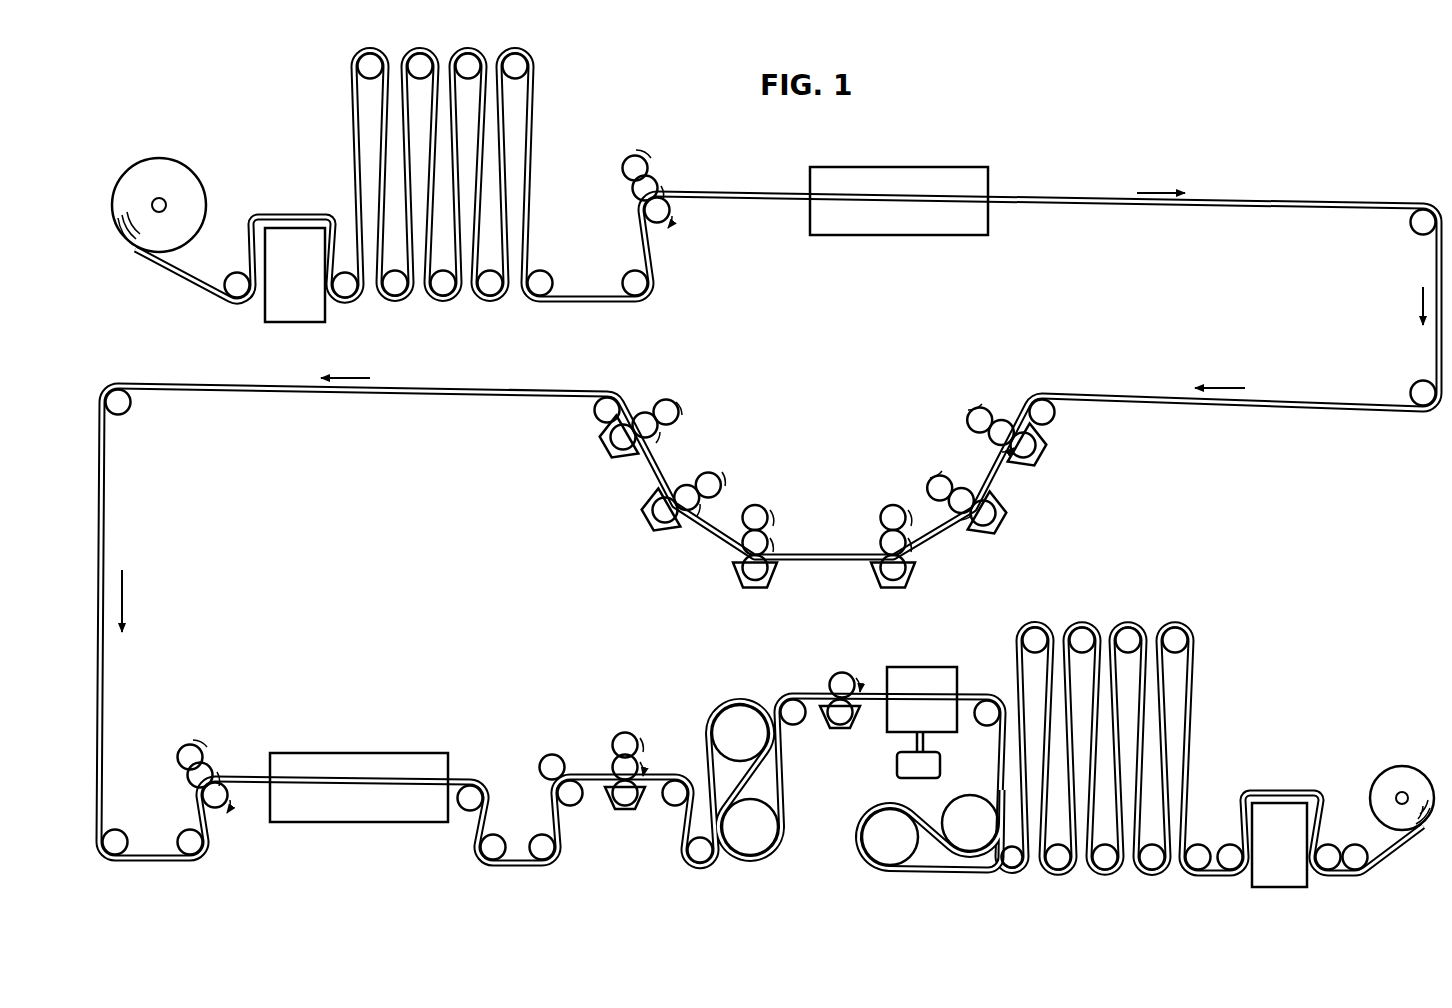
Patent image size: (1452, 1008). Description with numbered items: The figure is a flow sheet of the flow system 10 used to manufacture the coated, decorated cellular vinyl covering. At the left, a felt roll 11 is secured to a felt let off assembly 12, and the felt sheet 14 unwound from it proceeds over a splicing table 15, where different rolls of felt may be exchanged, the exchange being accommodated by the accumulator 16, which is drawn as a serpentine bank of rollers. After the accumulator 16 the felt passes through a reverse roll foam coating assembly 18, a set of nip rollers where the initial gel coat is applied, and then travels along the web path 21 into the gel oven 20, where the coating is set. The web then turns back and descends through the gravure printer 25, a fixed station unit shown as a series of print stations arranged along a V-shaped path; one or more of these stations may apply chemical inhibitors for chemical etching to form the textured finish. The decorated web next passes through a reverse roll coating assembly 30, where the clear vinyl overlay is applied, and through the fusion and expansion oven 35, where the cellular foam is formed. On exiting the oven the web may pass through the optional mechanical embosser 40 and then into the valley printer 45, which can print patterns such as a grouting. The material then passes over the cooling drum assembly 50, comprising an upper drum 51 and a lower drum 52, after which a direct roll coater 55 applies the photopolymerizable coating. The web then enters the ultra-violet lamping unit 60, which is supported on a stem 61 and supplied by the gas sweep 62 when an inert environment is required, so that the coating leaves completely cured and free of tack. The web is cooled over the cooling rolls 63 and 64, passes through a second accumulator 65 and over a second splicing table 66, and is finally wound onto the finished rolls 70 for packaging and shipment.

The flow system 10 is at (1040, 146).
The felt roll 11 is at (188, 185).
The felt let off assembly 12 is at (184, 128).
The felt sheet 14 is at (198, 285).
The splicing table 15 is at (298, 205).
The accumulator 16 is at (478, 312).
The reverse roll foam coating assembly 18 is at (669, 158).
The gel oven 20 is at (888, 164).
The web path 21 is at (1257, 203).
The gravure printer 25 is at (830, 412).
The reverse roll coating assembly 30 is at (244, 712).
The fusion and expansion oven 35 is at (345, 823).
The mechanical embosser 40 is at (538, 754).
The valley printer 45 is at (626, 727).
The cooling drum assembly 50 is at (790, 792).
The upper drum 51 is at (750, 747).
The lower drum 52 is at (762, 842).
The coating station 55 is at (843, 670).
The ultra-violet lamping unit 60 is at (960, 640).
The support stem 61 is at (912, 741).
The gas sweep 62 is at (905, 778).
The cooling roll 63 is at (983, 836).
The cooling roll 64 is at (902, 851).
The accumulator 65 is at (1126, 612).
The splicing table 66 is at (1295, 786).
The finished rolls 70 is at (1406, 762).